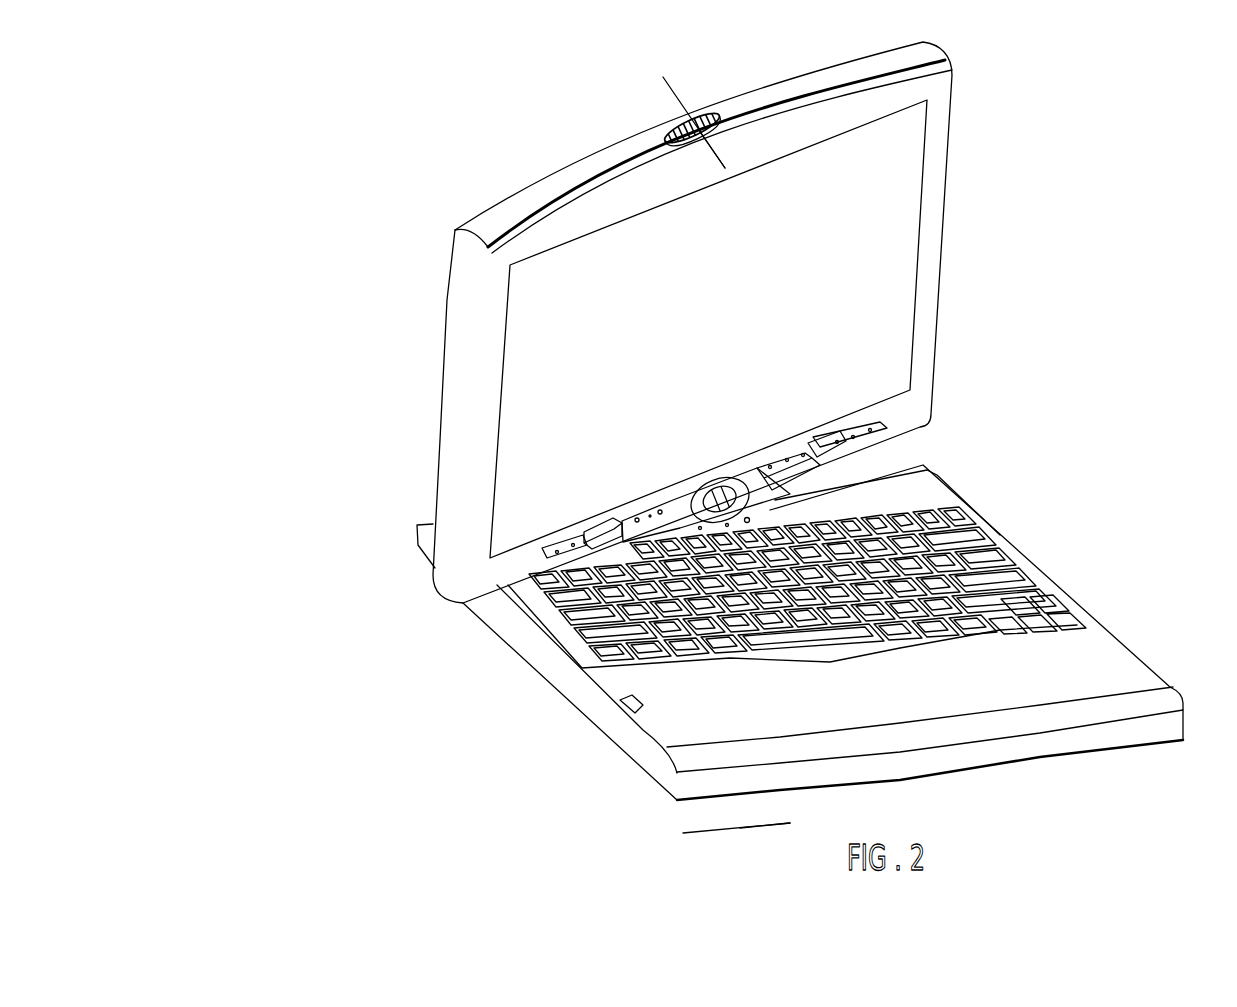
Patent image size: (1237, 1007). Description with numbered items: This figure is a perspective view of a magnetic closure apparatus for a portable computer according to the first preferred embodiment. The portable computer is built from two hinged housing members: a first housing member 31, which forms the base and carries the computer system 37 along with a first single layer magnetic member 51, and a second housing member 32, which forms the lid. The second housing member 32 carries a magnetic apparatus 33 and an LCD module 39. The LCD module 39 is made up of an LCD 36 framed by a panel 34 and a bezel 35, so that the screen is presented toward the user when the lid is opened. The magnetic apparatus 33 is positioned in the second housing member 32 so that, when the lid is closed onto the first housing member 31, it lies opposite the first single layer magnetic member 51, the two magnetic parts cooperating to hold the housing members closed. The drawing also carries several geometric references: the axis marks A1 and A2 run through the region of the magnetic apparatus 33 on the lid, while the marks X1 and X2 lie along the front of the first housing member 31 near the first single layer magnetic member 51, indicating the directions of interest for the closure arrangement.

The LCD module 39 is at (327, 327).
The first housing member 31 is at (500, 613).
The second housing member 32 is at (943, 230).
The magnetic apparatus 33 is at (718, 115).
The panel 34 is at (927, 50).
The bezel 35 is at (940, 68).
The LCD 36 is at (890, 357).
The computer system 37 is at (680, 713).
The first single layer magnetic member 51 is at (920, 703).
The axis A1 is at (686, 106).
The axis A2 is at (730, 171).
The axis X1 is at (718, 834).
The axis X2 is at (783, 824).